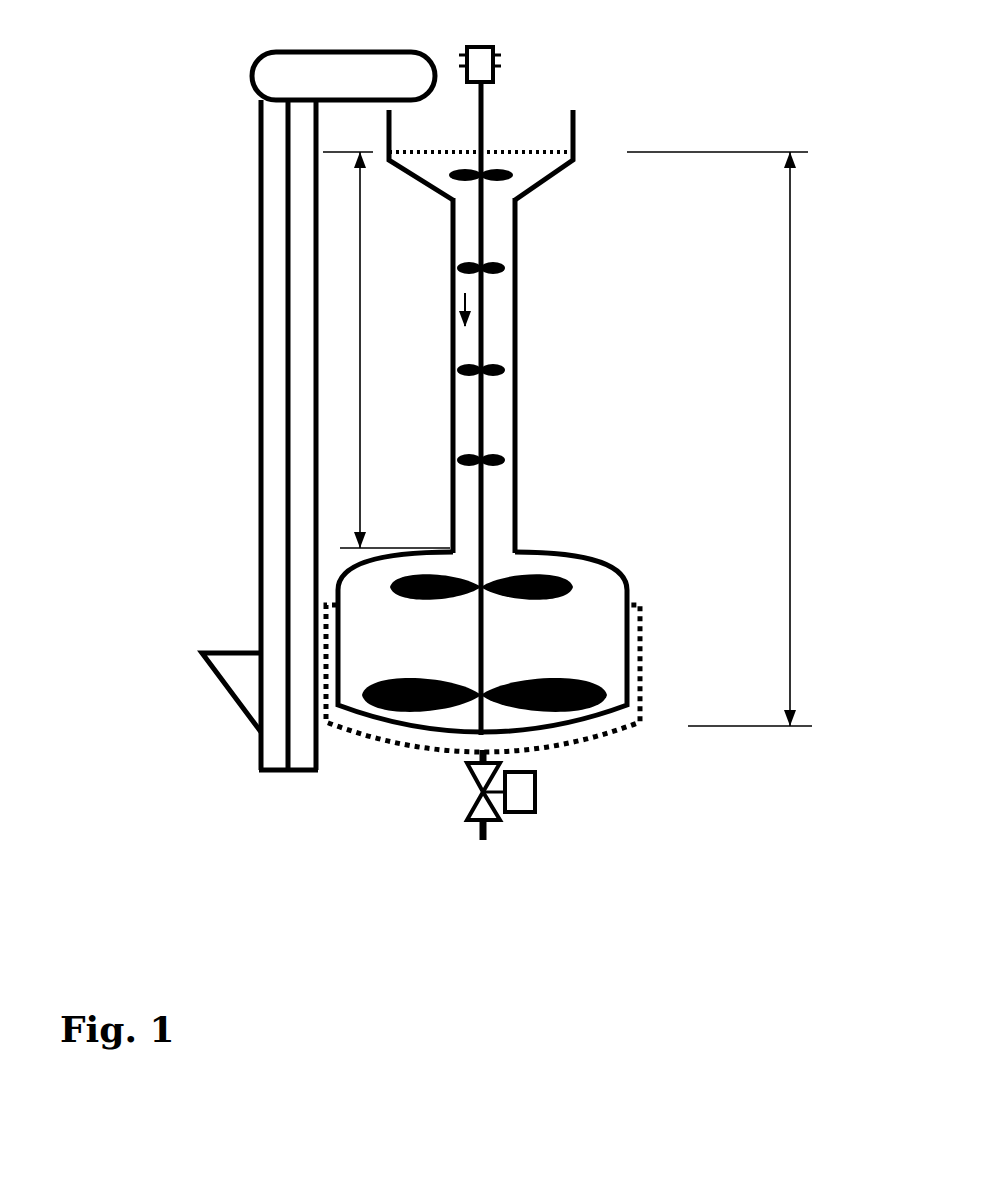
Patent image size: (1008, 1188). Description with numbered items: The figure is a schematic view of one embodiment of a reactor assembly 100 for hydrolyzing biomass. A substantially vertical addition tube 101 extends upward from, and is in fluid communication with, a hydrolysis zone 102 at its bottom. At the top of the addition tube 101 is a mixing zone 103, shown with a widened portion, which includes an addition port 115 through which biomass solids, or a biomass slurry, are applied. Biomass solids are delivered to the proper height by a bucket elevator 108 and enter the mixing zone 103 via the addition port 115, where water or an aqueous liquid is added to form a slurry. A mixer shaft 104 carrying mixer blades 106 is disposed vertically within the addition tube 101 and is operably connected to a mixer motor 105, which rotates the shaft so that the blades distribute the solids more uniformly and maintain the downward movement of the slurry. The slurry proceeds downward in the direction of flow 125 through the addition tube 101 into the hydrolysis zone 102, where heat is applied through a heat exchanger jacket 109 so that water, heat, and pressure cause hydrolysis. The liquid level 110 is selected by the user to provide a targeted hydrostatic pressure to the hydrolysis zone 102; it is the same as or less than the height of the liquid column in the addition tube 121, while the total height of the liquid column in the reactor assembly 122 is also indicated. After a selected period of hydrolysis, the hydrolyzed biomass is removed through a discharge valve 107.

The reactor assembly 100 is at (738, 92).
The addition tube 101 is at (518, 327).
The hydrolysis zone 102 is at (625, 570).
The mixing zone 103 is at (528, 130).
The mixer shaft 104 is at (486, 248).
The mixer motor 105 is at (498, 50).
The mixer blades 106 is at (540, 670).
The discharge valve 107 is at (478, 793).
The bucket elevator 108 is at (246, 651).
The heat exchanger jacket 109 is at (645, 686).
The liquid level 110 is at (541, 154).
The addition port 115 is at (447, 95).
The height of liquid column in addition tube 121 is at (386, 350).
The total height of liquid column in reactor assembly 122 is at (731, 439).
The direction of flow in addition tube 125 is at (460, 308).